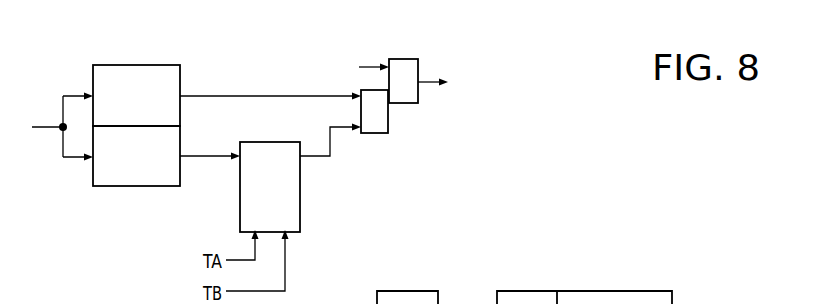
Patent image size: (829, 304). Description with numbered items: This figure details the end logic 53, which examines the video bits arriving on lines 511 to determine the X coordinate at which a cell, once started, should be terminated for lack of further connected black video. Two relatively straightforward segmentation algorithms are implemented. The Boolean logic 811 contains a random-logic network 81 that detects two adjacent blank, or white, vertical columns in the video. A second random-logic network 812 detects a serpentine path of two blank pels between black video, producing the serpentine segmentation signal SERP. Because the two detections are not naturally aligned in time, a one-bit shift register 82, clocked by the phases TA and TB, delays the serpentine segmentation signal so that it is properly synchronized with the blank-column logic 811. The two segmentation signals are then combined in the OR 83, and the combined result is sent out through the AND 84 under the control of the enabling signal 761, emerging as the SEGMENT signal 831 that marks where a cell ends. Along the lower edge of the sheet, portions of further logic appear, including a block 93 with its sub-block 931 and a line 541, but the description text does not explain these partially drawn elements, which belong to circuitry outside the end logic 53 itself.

The lines 511 is at (42, 119).
The random-logic network 81 is at (227, 133).
The Boolean logic 811 is at (182, 68).
The random-logic network 812 is at (182, 133).
The one-bit shift register 82 is at (301, 205).
The OR 83 is at (379, 134).
The AND 84 is at (411, 104).
The SEGMENT signal 831 is at (432, 84).
The enabling signal 761 is at (370, 58).
The end logic 53 is at (66, 225).
The register block 93 is at (584, 280).
The register stage 931 is at (504, 290).
The data line 541 is at (695, 303).